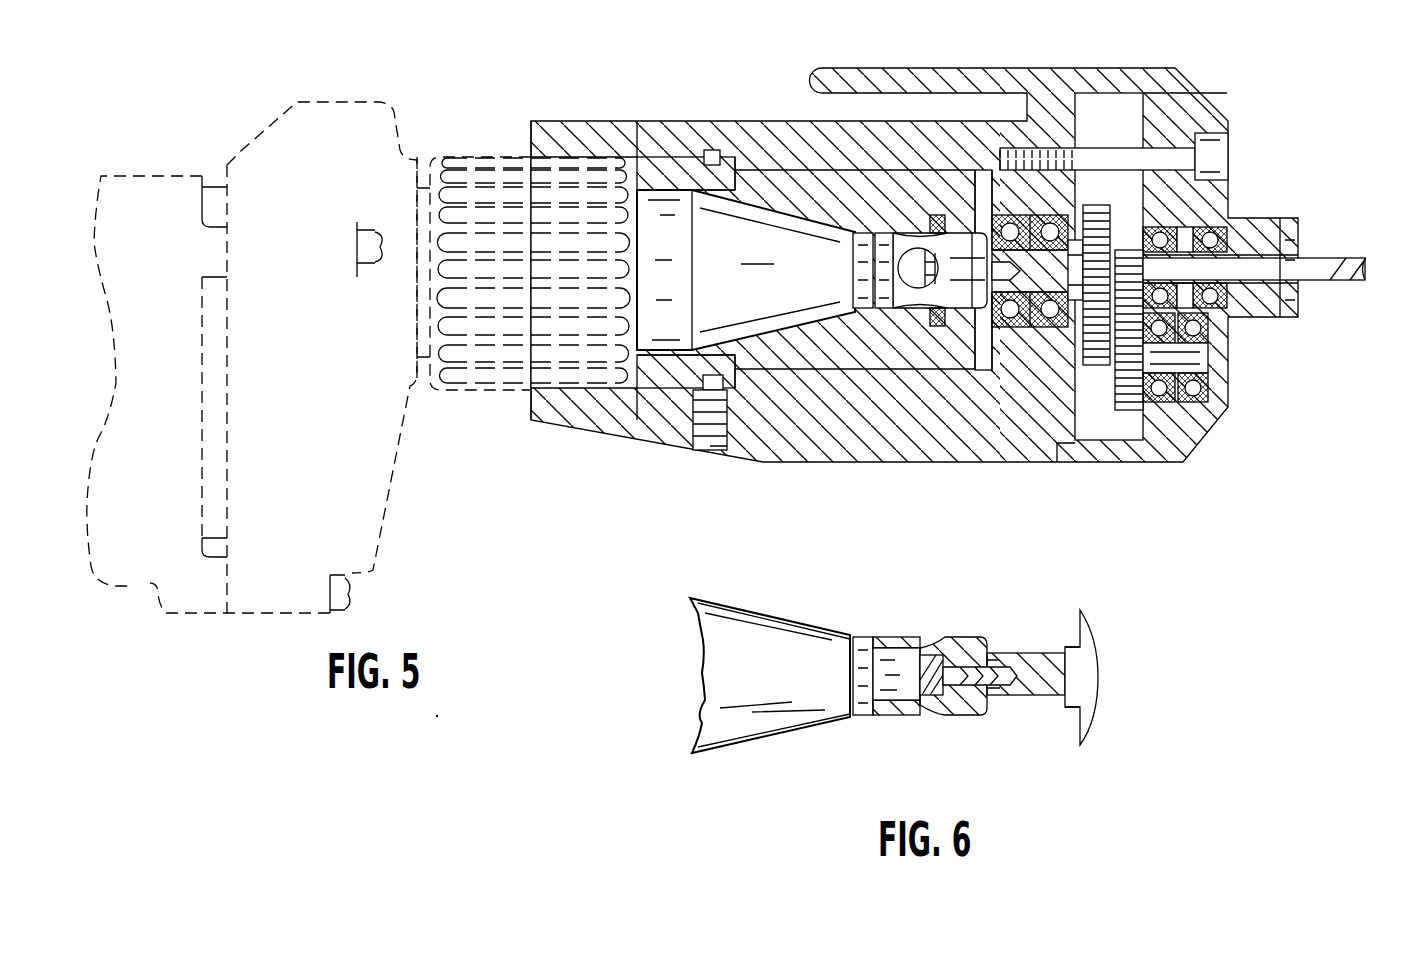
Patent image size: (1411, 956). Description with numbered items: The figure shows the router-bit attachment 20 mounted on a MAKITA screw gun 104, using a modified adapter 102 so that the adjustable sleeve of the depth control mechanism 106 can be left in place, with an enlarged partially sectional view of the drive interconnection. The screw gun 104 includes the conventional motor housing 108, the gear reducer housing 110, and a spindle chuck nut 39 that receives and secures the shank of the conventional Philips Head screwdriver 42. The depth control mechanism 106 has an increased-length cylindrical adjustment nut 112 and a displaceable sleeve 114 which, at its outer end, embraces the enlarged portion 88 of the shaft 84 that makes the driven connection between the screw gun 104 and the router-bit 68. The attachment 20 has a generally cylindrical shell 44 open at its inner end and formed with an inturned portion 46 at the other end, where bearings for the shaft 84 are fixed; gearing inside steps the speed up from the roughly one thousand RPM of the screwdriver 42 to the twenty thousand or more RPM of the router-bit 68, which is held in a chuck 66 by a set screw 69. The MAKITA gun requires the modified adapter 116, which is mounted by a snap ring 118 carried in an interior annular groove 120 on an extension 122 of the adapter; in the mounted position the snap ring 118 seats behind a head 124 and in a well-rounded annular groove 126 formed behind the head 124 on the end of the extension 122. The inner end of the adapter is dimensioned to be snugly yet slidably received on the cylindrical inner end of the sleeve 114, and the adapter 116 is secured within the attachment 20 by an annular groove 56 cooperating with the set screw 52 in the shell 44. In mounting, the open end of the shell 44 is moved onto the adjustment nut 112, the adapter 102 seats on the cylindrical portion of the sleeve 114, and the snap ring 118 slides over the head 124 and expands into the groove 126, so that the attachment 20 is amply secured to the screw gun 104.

In FIG. 5, the router-bit attachment 20 is at (753, 481).
In FIG. 5, the spindle chuck nut 39 is at (917, 290).
In FIG. 6, the spindle chuck nut 39 is at (900, 667).
In FIG. 6, the Philips Head screwdriver 42 is at (966, 690).
In FIG. 5, the cylindrical shell 44 is at (560, 408).
In FIG. 5, the inturned portion 46 is at (1000, 197).
In FIG. 5, the set screw 52 is at (712, 450).
In FIG. 5, the annular groove 56 is at (712, 150).
In FIG. 5, the chuck 66 is at (1258, 310).
In FIG. 5, the router-bit 68 is at (1340, 283).
In FIG. 5, the set screw 69 is at (1298, 317).
In FIG. 5, the shaft 84 is at (1015, 333).
In FIG. 6, the shaft 84 is at (1050, 677).
In FIG. 6, the enlarged portion 88 is at (970, 667).
In FIG. 5, the modified adapter 102 is at (664, 162).
In FIG. 5, the screw gun 104 is at (213, 640).
In FIG. 5, the depth control mechanism 106 is at (746, 270).
In FIG. 5, the motor housing 108 is at (136, 575).
In FIG. 5, the gear reducer housing 110 is at (270, 140).
In FIG. 5, the cylindrical adjustment nut 112 is at (477, 365).
In FIG. 5, the displaceable sleeve 114 is at (808, 232).
In FIG. 5, the modified adapter 116 is at (668, 380).
In FIG. 5, the snap ring 118 is at (937, 326).
In FIG. 5, the interior annular groove 120 is at (945, 185).
In FIG. 5, the extension 122 is at (920, 190).
In FIG. 6, the extension 122 is at (930, 663).
In FIG. 5, the head 124 is at (983, 308).
In FIG. 6, the head 124 is at (980, 717).
In FIG. 5, the annular groove 126 is at (896, 314).
In FIG. 6, the annular groove 126 is at (898, 715).